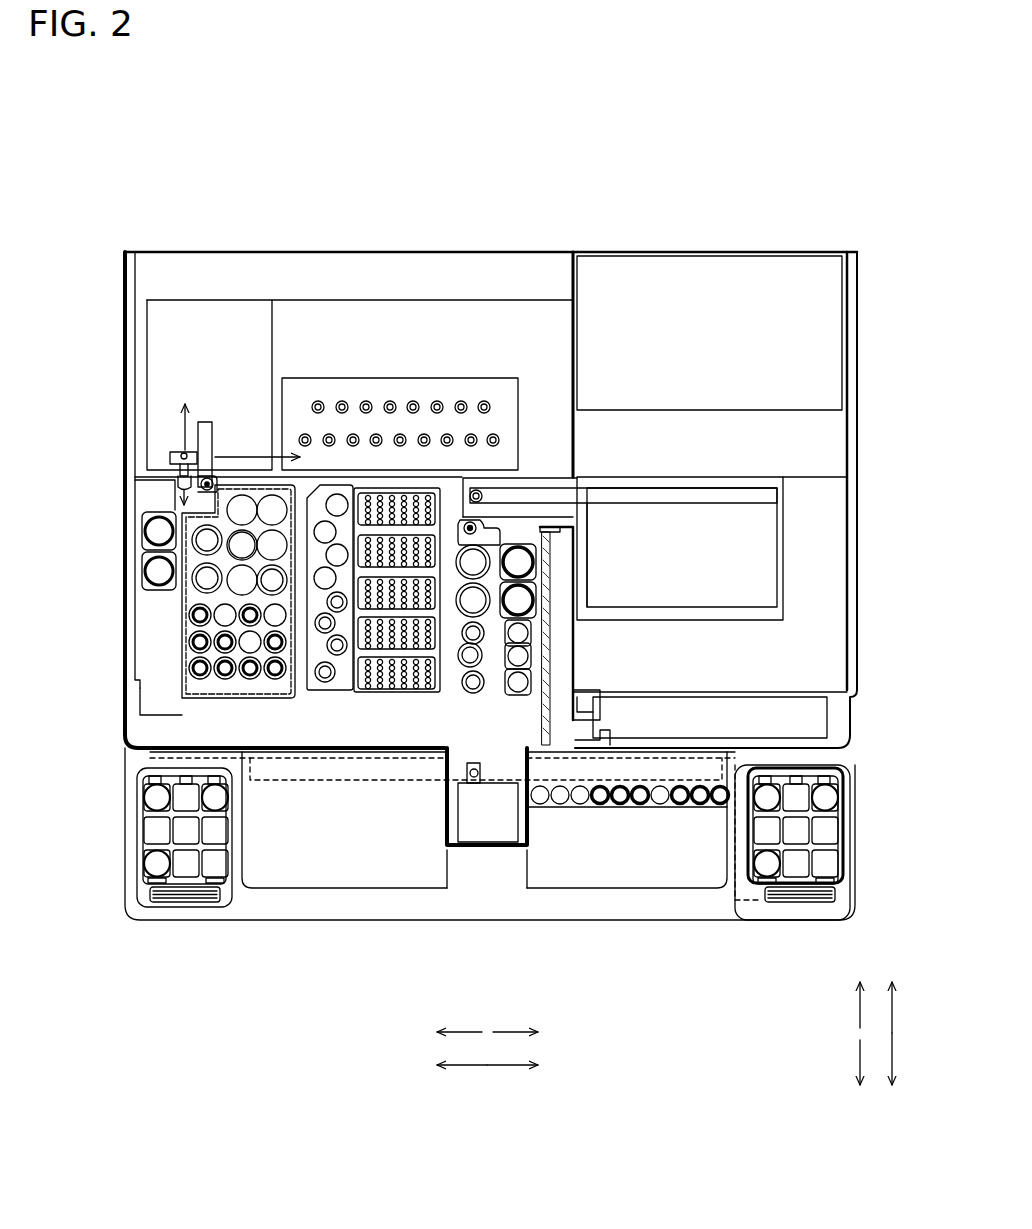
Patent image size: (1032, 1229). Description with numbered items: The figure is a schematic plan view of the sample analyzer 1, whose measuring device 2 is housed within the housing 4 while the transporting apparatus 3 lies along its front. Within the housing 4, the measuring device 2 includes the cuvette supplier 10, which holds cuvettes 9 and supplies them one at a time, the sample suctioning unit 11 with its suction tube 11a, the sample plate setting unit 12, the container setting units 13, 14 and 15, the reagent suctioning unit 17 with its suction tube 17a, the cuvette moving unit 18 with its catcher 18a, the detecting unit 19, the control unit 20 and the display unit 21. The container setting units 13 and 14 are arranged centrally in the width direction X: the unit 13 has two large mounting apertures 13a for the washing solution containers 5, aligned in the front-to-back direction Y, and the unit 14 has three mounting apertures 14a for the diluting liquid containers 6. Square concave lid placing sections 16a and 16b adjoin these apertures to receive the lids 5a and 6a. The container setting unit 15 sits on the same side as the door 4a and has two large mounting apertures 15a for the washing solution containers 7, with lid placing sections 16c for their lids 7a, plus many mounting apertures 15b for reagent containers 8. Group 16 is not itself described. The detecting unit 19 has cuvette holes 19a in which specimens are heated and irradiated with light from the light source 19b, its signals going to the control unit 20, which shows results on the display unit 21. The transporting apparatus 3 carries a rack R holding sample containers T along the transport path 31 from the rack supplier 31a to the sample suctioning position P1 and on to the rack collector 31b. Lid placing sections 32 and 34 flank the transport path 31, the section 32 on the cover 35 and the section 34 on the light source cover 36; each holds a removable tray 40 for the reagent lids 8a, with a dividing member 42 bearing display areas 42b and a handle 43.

The sample analyzer 1 is at (722, 226).
The measuring device 2 is at (830, 500).
The transporting apparatus 3 is at (615, 922).
The housing 4 is at (860, 295).
The door 4a is at (330, 755).
The washing solution container 5 is at (465, 548).
The lid 5a is at (522, 562).
The diluting liquid container 6 is at (462, 633).
The lid 6a is at (528, 657).
The washing solution container 7 is at (240, 512).
The lid 7a is at (158, 532).
The reagent container 8 is at (200, 672).
The lid 8a is at (157, 797).
The cuvette 9 is at (482, 496).
The cuvette supplier 10 is at (792, 575).
The sample suctioning unit 11 is at (600, 525).
The suction tube 11a is at (510, 530).
The sample plate setting unit 12 is at (395, 688).
The container setting unit 13 is at (460, 545).
The mounting aperture 13a is at (500, 528).
The container setting unit 14 is at (470, 700).
The mounting aperture 14a is at (482, 690).
The container setting unit 15 is at (140, 708).
The mounting aperture 15a is at (241, 585).
The mounting aperture 15b is at (200, 625).
The connector strip 16 is at (330, 587).
The lid placing section 16a is at (546, 545).
The lid placing section 16b is at (546, 620).
The lid placing section 16c is at (205, 540).
The reagent suctioning unit 17 is at (213, 452).
The suction tube 17a is at (213, 482).
The cuvette moving unit 18 is at (172, 446).
The catcher 18a is at (182, 487).
The detecting unit 19 is at (422, 384).
The cuvette hole 19a is at (318, 400).
The light source 19b is at (842, 762).
The control unit 20 is at (600, 295).
The display unit 21 is at (810, 722).
The transport path 31 is at (295, 782).
The rack supplier 31a is at (560, 852).
The rack collector 31b is at (320, 865).
The lid placing section 32 is at (142, 900).
The lid placing section 34 is at (835, 900).
The cover 35 is at (148, 905).
The light source cover 36 is at (800, 918).
The tray 40 is at (152, 830).
The dividing member 42 is at (826, 840).
The display area 42b is at (182, 905).
The handle 43 is at (222, 905).
The sample suctioning position P1 is at (478, 795).
The sample container T is at (670, 805).
The rack R is at (640, 802).
The X direction X is at (487, 1060).
The Y direction Y is at (885, 1033).